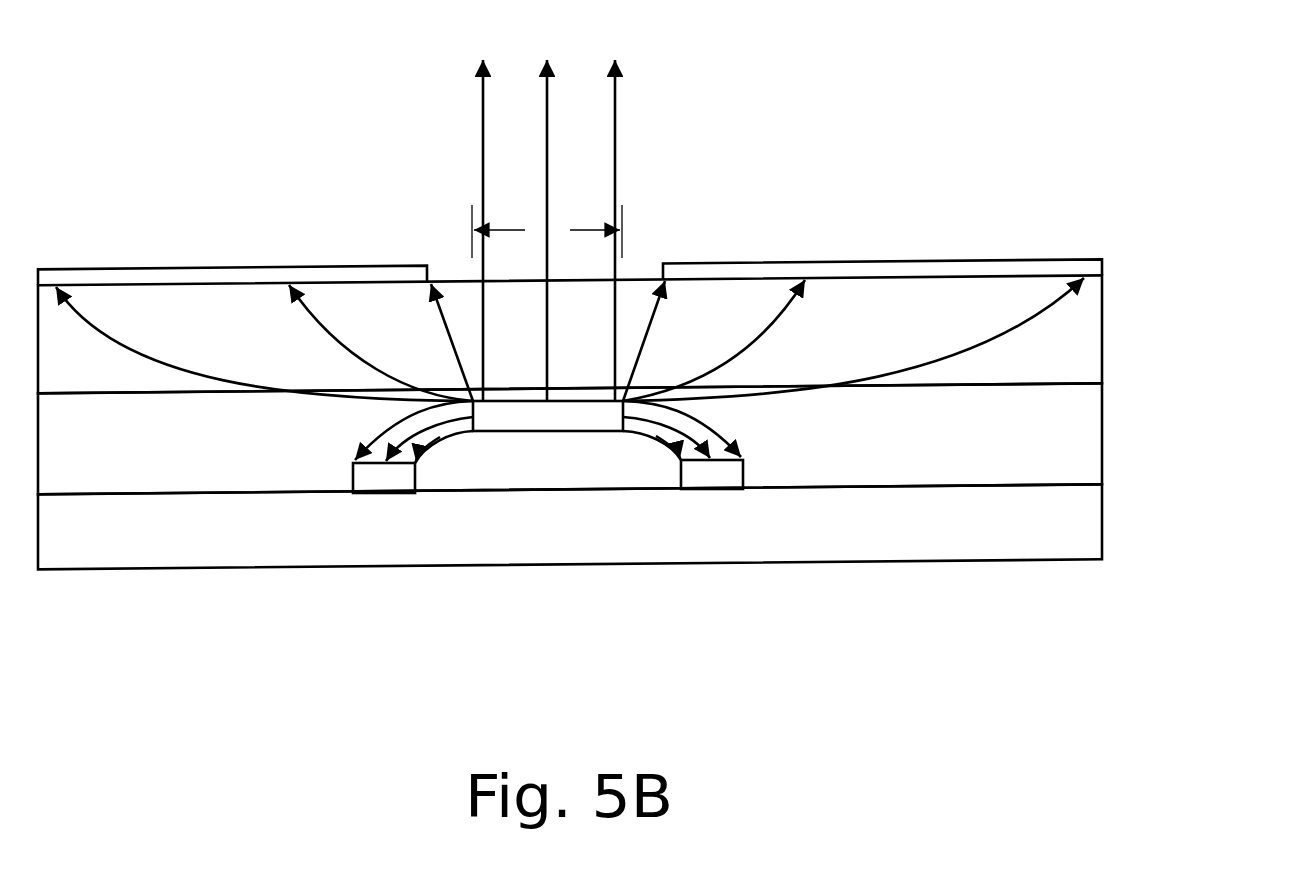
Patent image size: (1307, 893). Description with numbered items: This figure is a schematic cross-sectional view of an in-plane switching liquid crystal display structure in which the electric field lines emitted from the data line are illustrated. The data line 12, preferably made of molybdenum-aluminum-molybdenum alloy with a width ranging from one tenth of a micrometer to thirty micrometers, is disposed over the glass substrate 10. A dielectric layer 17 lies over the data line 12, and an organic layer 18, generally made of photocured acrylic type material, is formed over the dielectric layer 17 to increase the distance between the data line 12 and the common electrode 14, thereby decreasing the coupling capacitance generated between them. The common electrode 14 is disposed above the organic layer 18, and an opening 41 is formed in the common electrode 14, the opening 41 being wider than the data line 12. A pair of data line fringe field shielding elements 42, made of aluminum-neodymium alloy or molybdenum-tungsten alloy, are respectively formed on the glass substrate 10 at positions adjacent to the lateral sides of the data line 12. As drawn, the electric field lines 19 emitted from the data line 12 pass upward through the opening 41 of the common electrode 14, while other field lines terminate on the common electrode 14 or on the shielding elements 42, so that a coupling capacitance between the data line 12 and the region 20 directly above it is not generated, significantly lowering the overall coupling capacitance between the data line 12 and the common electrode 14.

The glass substrate 10 is at (1087, 540).
The data line 12 is at (550, 423).
The common electrode 14 is at (1087, 270).
The dielectric layer 17 is at (1087, 458).
The organic layer 18 is at (1087, 352).
The electric field lines 19 is at (773, 337).
The region 20 is at (547, 231).
The opening 41 is at (593, 257).
The data line fringe field shielding element 42 is at (378, 482).